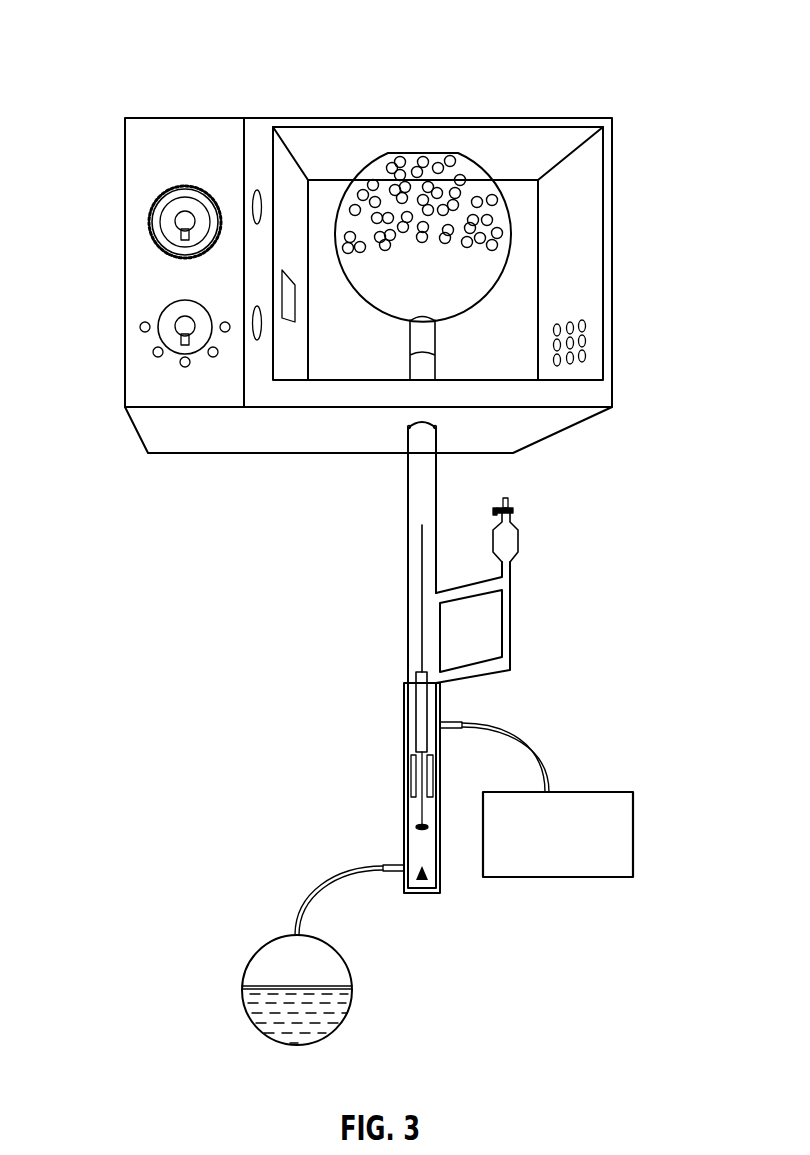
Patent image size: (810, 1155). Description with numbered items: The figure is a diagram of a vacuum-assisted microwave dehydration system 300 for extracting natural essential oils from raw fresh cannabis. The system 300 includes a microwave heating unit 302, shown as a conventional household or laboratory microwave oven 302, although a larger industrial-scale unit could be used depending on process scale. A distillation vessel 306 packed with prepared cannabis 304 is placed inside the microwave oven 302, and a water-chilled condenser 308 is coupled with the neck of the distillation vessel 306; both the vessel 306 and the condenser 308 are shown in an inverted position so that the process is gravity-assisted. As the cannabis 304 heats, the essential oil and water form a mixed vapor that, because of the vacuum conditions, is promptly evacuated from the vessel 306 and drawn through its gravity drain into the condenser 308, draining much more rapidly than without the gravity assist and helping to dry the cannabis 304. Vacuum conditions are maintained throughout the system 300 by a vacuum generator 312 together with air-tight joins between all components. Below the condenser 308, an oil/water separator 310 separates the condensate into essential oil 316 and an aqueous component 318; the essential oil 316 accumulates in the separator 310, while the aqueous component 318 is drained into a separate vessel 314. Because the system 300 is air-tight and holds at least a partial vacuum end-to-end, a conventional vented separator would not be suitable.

The vacuum-assisted microwave dehydration system 300 is at (118, 49).
The microwave heating unit 302 is at (612, 158).
The cannabis 304 is at (495, 215).
The distillation vessel 306 is at (335, 354).
The water-chilled condenser 308 is at (407, 538).
The oil/water separator 310 is at (404, 724).
The vacuum generator 312 is at (633, 834).
The separate vessel 314 is at (257, 950).
The essential oil 316 is at (422, 878).
The aqueous component 318 is at (277, 1017).